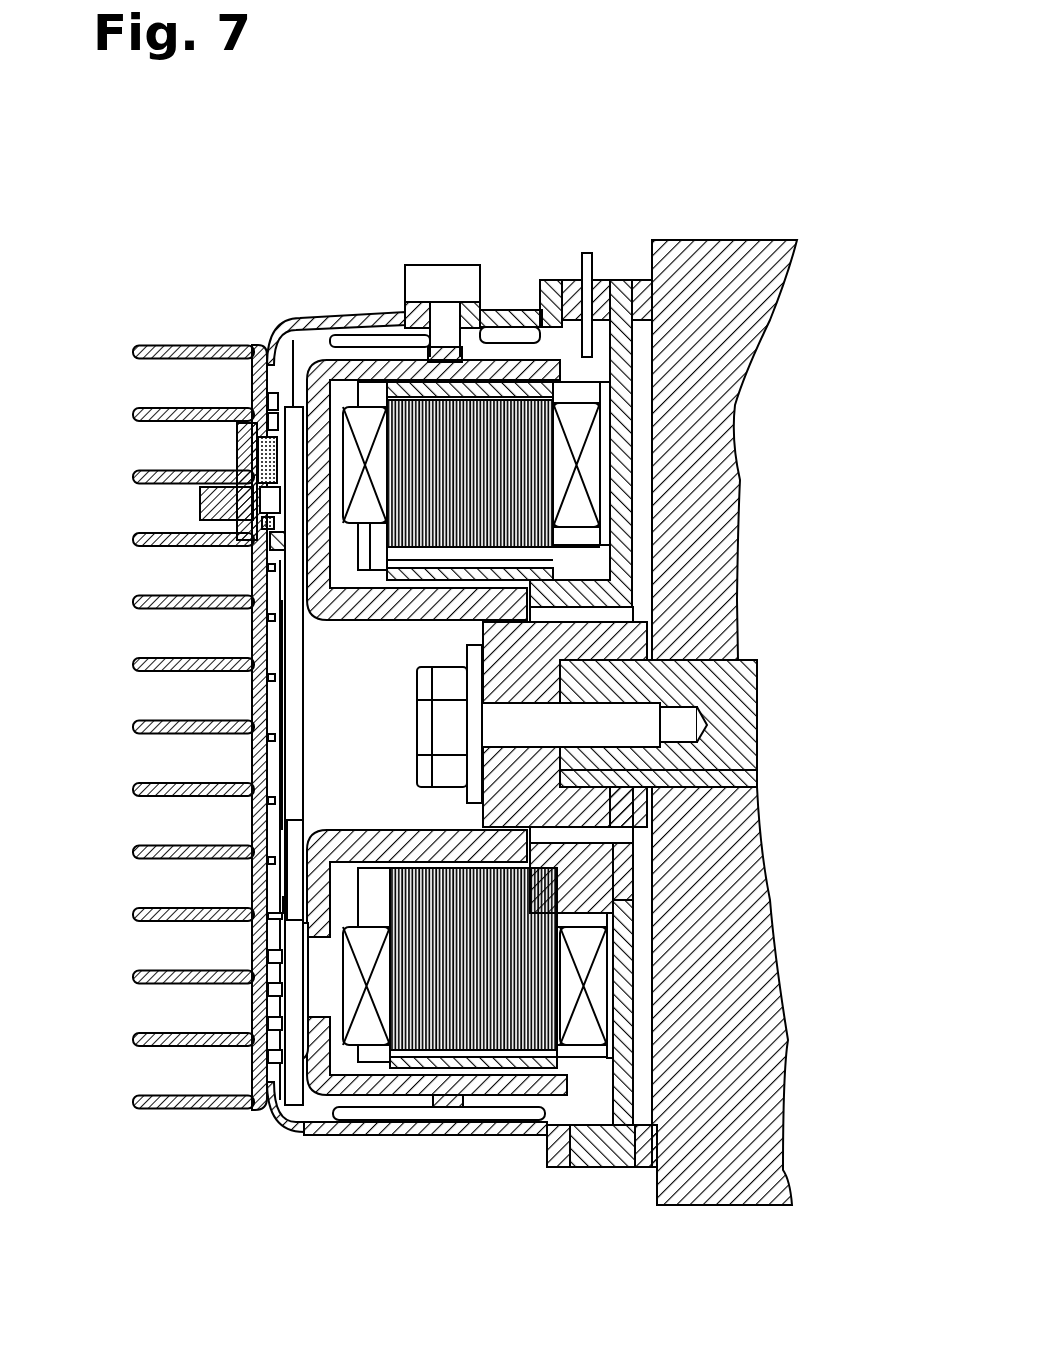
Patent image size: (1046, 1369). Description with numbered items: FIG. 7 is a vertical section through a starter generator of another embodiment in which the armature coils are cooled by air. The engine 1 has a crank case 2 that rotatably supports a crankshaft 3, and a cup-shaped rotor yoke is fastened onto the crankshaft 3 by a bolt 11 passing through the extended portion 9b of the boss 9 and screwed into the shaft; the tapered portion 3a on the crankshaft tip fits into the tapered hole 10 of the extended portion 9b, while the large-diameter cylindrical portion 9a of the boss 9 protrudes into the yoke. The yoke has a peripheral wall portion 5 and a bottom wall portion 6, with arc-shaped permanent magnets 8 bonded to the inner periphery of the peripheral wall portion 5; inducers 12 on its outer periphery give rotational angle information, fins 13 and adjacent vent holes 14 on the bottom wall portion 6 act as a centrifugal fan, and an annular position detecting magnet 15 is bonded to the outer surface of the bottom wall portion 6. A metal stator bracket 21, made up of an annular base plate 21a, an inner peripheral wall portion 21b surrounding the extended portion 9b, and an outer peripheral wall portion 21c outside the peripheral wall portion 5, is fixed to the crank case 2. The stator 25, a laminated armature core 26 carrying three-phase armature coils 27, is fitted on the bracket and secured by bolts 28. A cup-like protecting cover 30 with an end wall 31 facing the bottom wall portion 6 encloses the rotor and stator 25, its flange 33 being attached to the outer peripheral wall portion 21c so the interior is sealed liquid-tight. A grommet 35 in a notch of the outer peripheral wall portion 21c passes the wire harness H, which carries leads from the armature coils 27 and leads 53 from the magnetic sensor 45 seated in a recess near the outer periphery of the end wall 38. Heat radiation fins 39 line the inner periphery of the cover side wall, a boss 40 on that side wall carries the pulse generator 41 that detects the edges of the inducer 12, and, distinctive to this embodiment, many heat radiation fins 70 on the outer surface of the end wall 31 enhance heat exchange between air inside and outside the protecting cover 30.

The engine 1 is at (694, 236).
The crank case 2 is at (750, 275).
The crankshaft 3 is at (675, 688).
The tapered portion 3a is at (478, 812).
The peripheral wall portion 5 is at (402, 1095).
The bottom wall portion 6 is at (275, 548).
The permanent magnets 8 is at (530, 328).
The boss 9 is at (250, 808).
The cylindrical portion 9a is at (270, 695).
The extended portion 9b is at (627, 638).
The tapered hole 10 is at (750, 770).
The bolt 11 is at (440, 718).
The inducers 12 is at (420, 345).
The fins 13 is at (292, 425).
The vent holes 14 is at (262, 490).
The position detecting magnet 15 is at (285, 830).
The stator bracket 21 is at (692, 830).
The base plate 21a is at (648, 960).
The inner peripheral wall portion 21b is at (665, 943).
The outer peripheral wall portion 21c is at (615, 1168).
The stator 25 is at (575, 393).
The armature core 26 is at (560, 487).
The armature coils 27 is at (590, 448).
The bolts 28 is at (570, 552).
The protecting cover 30 is at (271, 1113).
The end wall 31 is at (270, 760).
The flange 33 is at (560, 1170).
The grommet 35 is at (602, 300).
The end wall 38 is at (265, 615).
The heat radiation fins 39 is at (497, 330).
The boss 40 is at (410, 318).
The pulse generator 41 is at (440, 285).
The magnetic sensor 45 is at (235, 447).
The leads 53 is at (262, 440).
The heat radiation fins 70 is at (250, 668).
The wire harness H is at (583, 350).